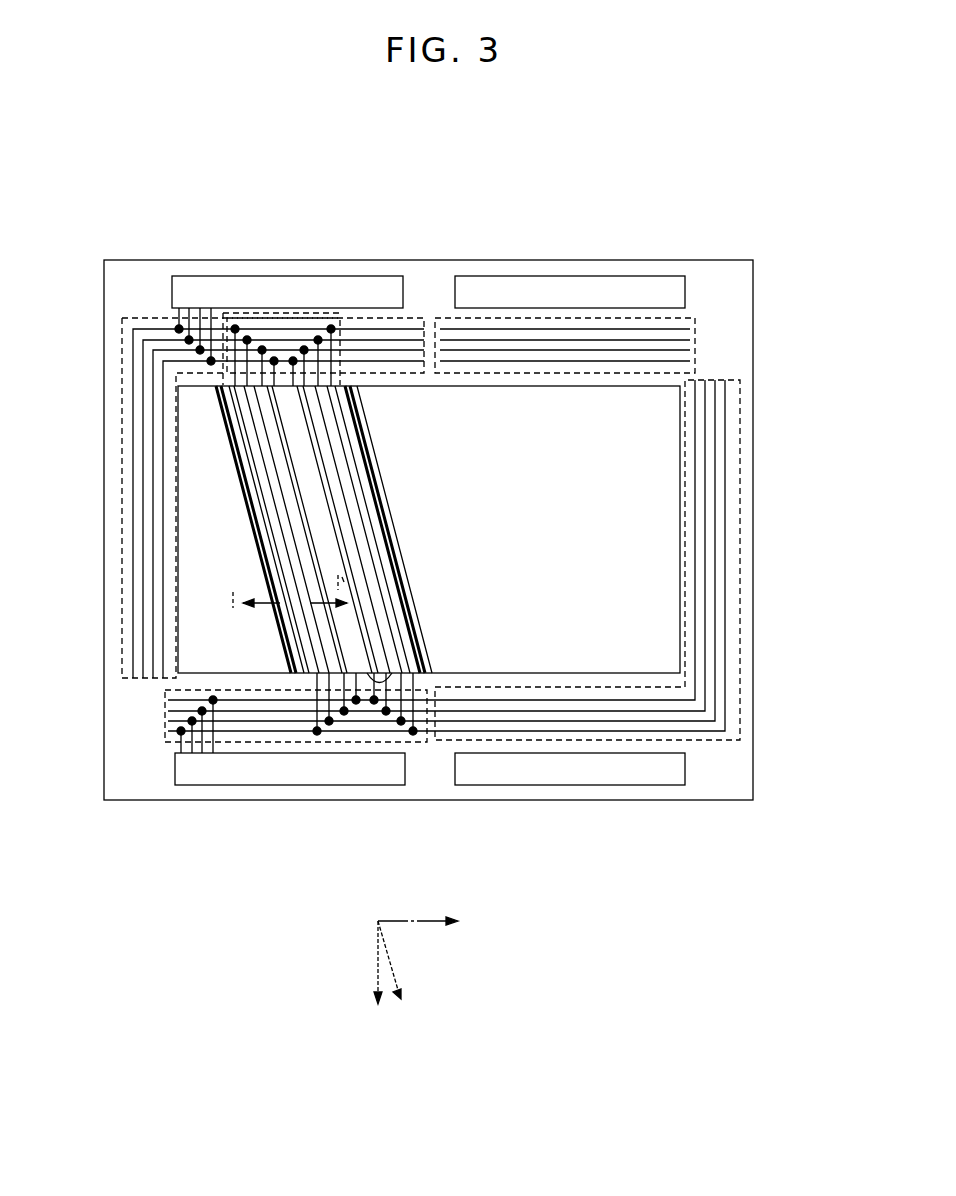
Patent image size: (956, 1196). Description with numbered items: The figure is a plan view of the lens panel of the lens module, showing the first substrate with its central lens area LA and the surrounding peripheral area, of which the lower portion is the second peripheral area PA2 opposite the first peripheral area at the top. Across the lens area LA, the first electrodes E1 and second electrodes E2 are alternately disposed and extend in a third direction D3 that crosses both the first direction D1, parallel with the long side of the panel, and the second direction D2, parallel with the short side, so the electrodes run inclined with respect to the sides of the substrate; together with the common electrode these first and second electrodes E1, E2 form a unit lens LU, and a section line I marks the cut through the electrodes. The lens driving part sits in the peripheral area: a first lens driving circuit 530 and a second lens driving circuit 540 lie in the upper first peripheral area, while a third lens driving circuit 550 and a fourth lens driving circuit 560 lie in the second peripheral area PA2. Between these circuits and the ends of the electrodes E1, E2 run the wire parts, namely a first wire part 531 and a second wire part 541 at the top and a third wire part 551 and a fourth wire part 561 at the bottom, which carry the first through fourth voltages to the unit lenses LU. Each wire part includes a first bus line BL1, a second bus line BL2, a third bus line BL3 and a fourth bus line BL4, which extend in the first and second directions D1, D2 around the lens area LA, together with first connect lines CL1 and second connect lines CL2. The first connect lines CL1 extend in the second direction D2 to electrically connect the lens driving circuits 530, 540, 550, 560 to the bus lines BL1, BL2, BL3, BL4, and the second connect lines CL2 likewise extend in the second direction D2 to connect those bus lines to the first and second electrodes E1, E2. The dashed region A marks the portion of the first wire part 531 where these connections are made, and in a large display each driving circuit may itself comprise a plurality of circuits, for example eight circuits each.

The first lens driving circuit 530 is at (228, 276).
The first wire part 531 is at (370, 318).
The second lens driving circuit 540 is at (560, 276).
The second wire part 541 is at (640, 318).
The third lens driving circuit 550 is at (303, 786).
The third wire part 551 is at (356, 742).
The fourth lens driving circuit 560 is at (505, 786).
The fourth wire part 561 is at (585, 742).
The region A is at (304, 318).
The first connect line CL1 is at (180, 314).
The second connect line CL2 is at (240, 374).
The first bus line BL1 is at (690, 329).
The second bus line BL2 is at (690, 340).
The third bus line BL3 is at (690, 350).
The fourth bus line BL4 is at (690, 361).
The first electrode E1 is at (245, 490).
The second electrode E2 is at (245, 465).
The lens area LA is at (657, 555).
The unit lens LU is at (385, 680).
The second peripheral area PA2 is at (722, 780).
The section line I-I' I is at (290, 591).
The first direction D1 is at (435, 922).
The second direction D2 is at (369, 978).
The third direction D3 is at (399, 976).